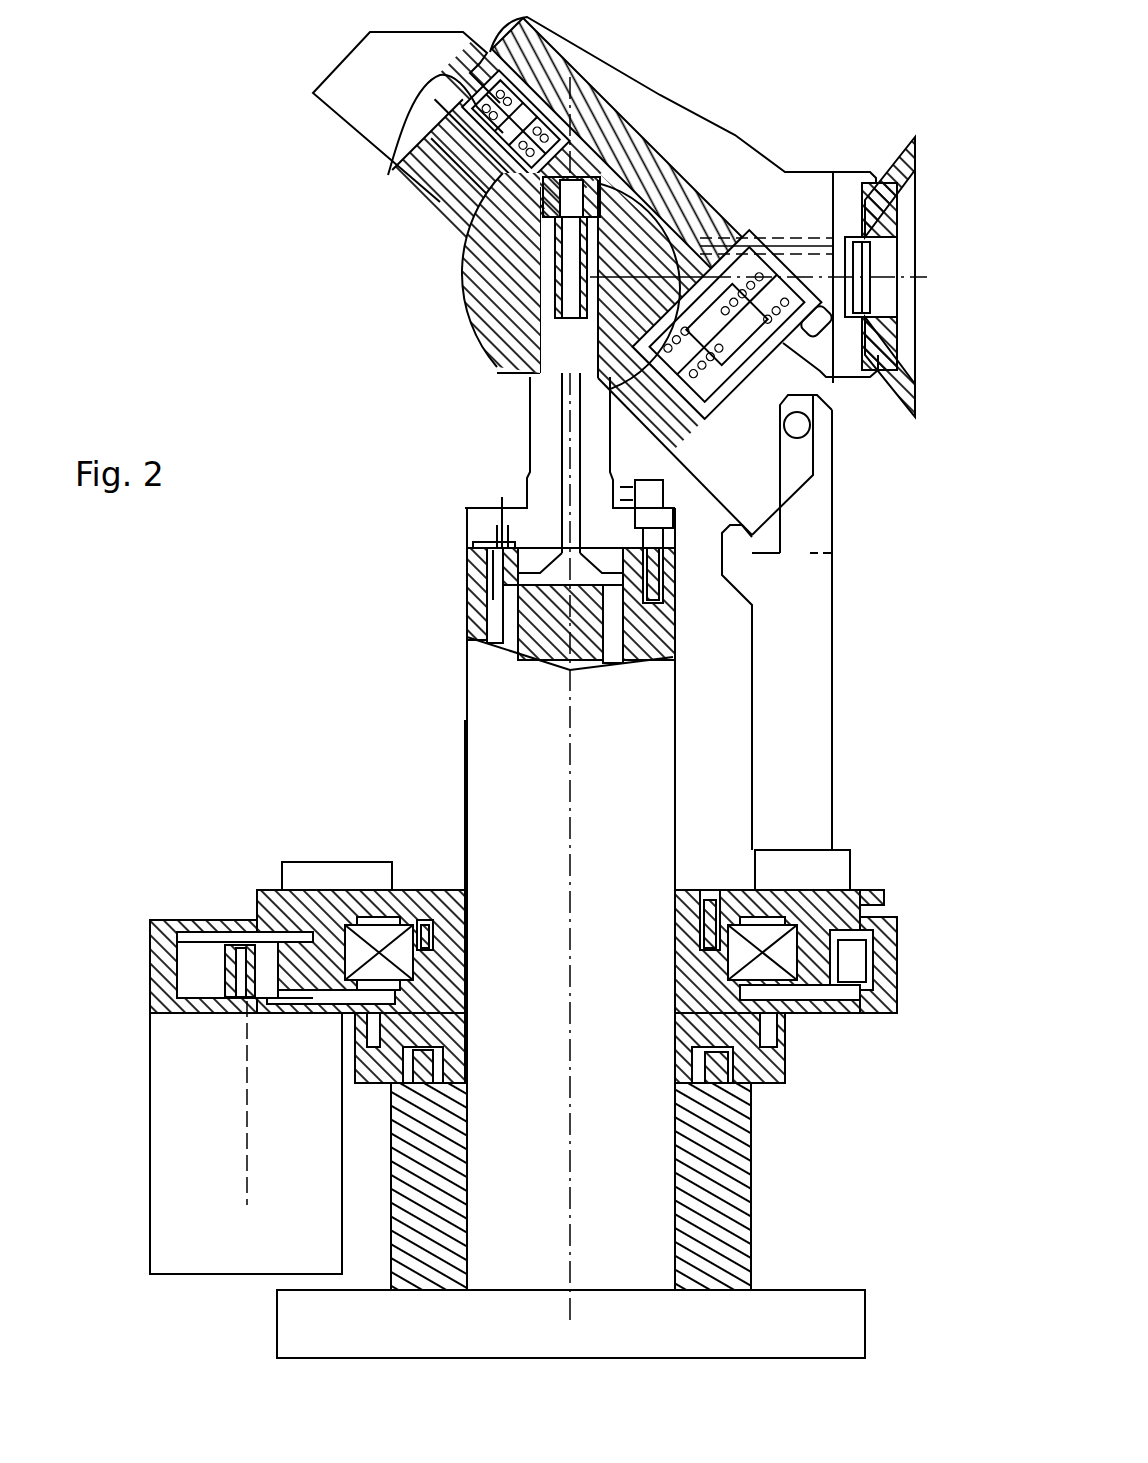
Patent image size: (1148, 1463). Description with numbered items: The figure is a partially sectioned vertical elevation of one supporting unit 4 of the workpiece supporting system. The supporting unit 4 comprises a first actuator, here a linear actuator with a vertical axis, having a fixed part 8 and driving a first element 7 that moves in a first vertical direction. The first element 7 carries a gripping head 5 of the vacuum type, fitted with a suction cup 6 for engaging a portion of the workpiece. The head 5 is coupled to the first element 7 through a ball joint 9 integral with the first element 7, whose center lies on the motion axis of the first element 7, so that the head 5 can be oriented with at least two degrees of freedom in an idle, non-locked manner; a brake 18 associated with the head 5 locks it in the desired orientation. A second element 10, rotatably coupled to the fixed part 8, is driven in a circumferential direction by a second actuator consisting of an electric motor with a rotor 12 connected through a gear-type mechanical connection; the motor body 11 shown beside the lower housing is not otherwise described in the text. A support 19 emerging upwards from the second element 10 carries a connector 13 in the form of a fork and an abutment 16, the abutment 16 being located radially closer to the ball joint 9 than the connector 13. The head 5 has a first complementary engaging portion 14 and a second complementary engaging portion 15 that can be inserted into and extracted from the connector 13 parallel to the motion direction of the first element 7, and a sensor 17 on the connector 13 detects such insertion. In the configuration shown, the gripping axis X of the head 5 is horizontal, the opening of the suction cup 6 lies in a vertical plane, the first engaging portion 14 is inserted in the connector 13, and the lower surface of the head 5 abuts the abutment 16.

The supporting unit 4 is at (140, 172).
The gripping head 5 is at (703, 148).
The suction cup 6 is at (893, 163).
The first element 7 is at (487, 792).
The fixed part 8 is at (744, 1175).
The ball joint 9 is at (493, 327).
The second element 10 is at (363, 897).
The motor 11 is at (160, 1138).
The rotor 12 is at (233, 937).
The connector 13 is at (825, 430).
The first complementary engaging portion 14 is at (750, 467).
The second complementary engaging portion 15 is at (368, 77).
The abutment 16 is at (735, 540).
The sensor 17 is at (797, 433).
The brake 18 is at (388, 175).
The support 19 is at (810, 768).
The gripping axis X is at (927, 278).